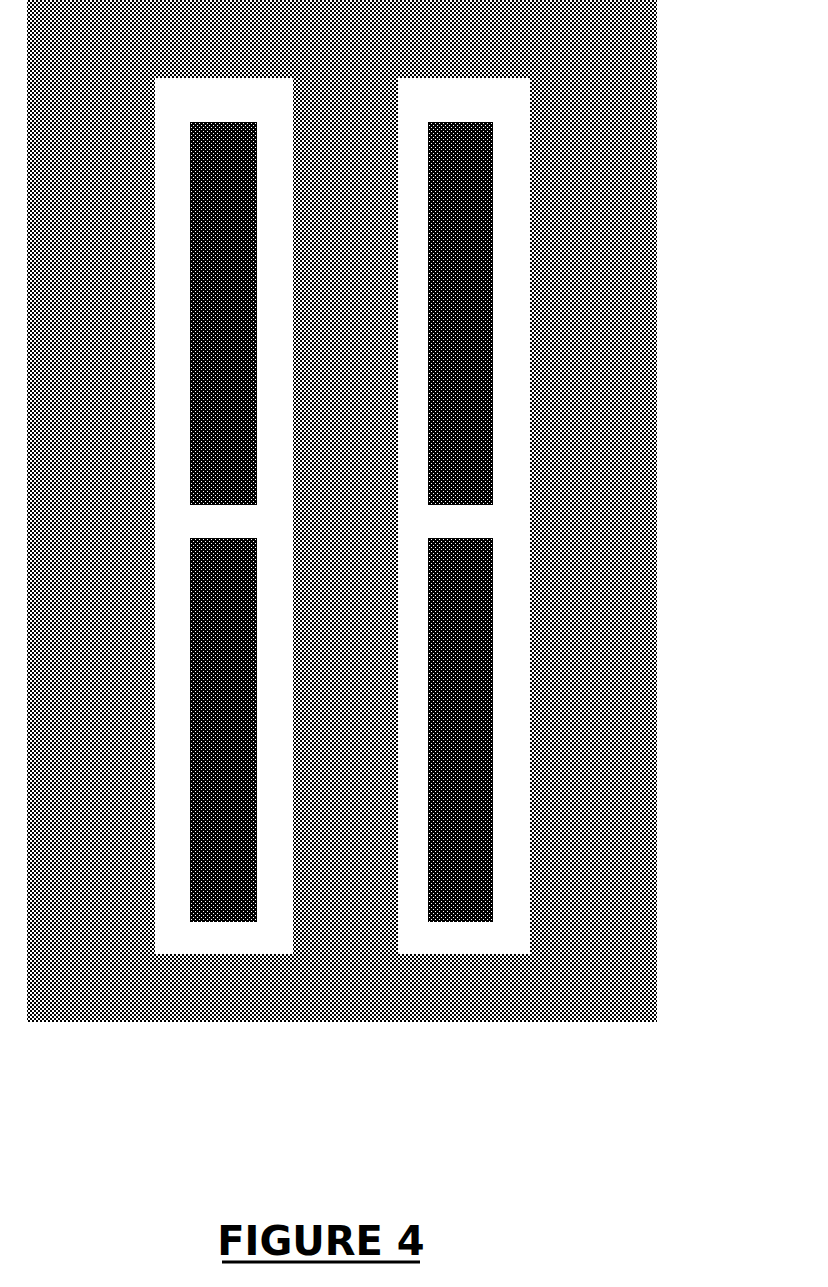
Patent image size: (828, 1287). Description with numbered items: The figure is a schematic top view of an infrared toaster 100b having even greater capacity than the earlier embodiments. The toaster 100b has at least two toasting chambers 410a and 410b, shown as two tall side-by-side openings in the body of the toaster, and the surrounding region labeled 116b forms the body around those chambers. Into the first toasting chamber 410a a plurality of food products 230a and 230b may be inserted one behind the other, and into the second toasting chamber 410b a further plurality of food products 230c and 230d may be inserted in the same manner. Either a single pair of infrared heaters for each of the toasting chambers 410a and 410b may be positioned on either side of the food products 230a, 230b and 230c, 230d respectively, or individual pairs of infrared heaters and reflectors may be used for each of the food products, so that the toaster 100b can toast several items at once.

The toaster 100b is at (384, 581).
The substrate 116b is at (648, 55).
The toasting chamber 410a is at (200, 106).
The toasting chamber 410b is at (436, 106).
The food product 230a is at (257, 165).
The food product 230b is at (257, 605).
The food product 230c is at (493, 177).
The food product 230d is at (493, 593).